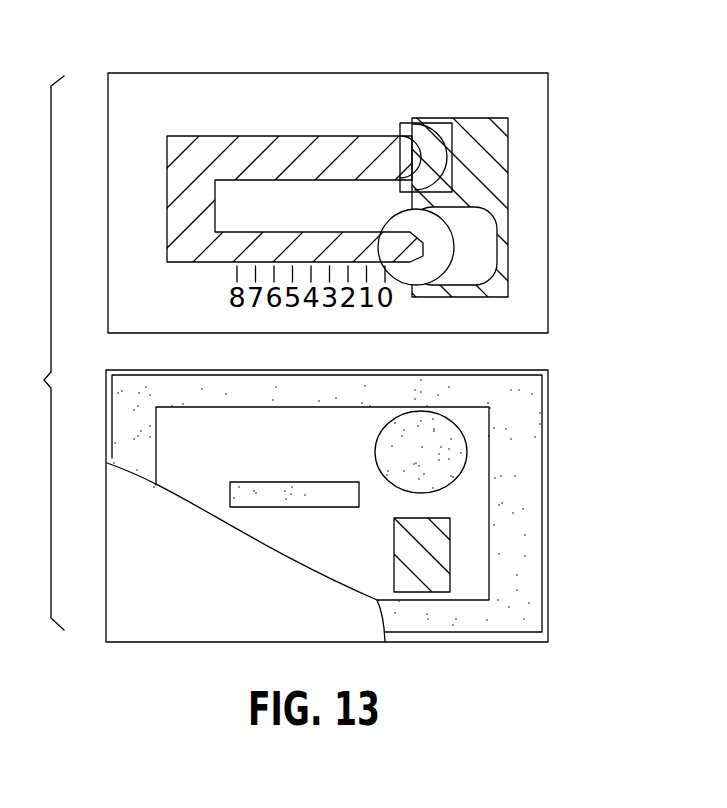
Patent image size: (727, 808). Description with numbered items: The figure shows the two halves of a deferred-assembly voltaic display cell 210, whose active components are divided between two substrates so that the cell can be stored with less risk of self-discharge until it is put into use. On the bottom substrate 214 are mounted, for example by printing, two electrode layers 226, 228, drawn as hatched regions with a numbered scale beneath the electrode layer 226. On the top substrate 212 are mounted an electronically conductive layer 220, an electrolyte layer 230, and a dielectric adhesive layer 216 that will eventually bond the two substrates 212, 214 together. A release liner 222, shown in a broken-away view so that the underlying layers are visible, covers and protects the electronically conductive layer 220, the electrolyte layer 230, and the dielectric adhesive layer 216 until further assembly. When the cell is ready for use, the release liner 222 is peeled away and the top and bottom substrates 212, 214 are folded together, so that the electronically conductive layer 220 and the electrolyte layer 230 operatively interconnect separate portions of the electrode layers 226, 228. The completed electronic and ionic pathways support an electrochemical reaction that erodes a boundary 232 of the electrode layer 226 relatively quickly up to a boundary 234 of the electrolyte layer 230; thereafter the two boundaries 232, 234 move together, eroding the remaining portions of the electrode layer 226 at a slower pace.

The voltaic display cell 210 is at (270, 55).
The top substrate 212 is at (106, 432).
The bottom substrate 214 is at (535, 257).
The dielectric adhesive layer 216 is at (320, 498).
The electronically conductive layer 220 is at (425, 568).
The release liner 222 is at (213, 587).
The electrode layer 226 is at (290, 157).
The electrode layer 228 is at (508, 142).
The electrolyte layer 230 is at (418, 450).
The boundary of the electrode layer 232 is at (405, 288).
The boundary of the electrolyte layer 234 is at (392, 246).